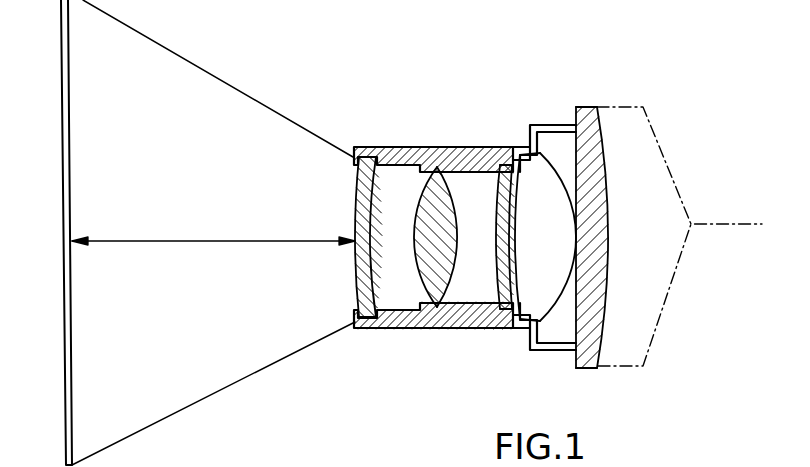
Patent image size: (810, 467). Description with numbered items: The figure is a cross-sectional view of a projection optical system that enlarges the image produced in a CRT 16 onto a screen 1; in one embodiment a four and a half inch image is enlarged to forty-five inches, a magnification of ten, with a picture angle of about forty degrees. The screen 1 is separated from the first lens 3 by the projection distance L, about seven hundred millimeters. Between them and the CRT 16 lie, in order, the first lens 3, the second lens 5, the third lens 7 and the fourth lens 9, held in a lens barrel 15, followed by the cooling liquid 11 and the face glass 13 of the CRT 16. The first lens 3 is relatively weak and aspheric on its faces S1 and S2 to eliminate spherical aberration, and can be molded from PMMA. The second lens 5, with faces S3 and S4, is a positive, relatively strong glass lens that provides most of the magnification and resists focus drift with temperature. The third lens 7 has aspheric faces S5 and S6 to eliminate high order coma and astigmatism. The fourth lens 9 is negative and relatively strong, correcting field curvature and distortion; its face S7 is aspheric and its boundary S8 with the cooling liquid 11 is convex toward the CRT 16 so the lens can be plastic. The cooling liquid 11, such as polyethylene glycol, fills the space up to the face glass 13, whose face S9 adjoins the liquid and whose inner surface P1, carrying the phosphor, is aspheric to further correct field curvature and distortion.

The screen 1 is at (60, 216).
The first lens 3 is at (359, 210).
The second lens 5 is at (435, 203).
The third lens 7 is at (489, 203).
The fourth lens 9 is at (545, 200).
The cooling liquid 11 is at (557, 351).
The face glass 13 is at (606, 239).
The lens barrel 15 is at (405, 329).
The CRT 16 is at (693, 222).
The distance L is at (213, 227).
The face of first lens S1 is at (358, 198).
The face of first lens S2 is at (373, 248).
The face of second lens S3 is at (418, 212).
The face of second lens S4 is at (457, 244).
The face of third lens S5 is at (494, 210).
The face of third lens S6 is at (518, 229).
The face of fourth lens S7 is at (565, 260).
The boundary between fourth lens and cooling liquid S8 is at (575, 178).
The face of face glass S9 is at (572, 142).
The inner surface of face glass P1 is at (600, 282).